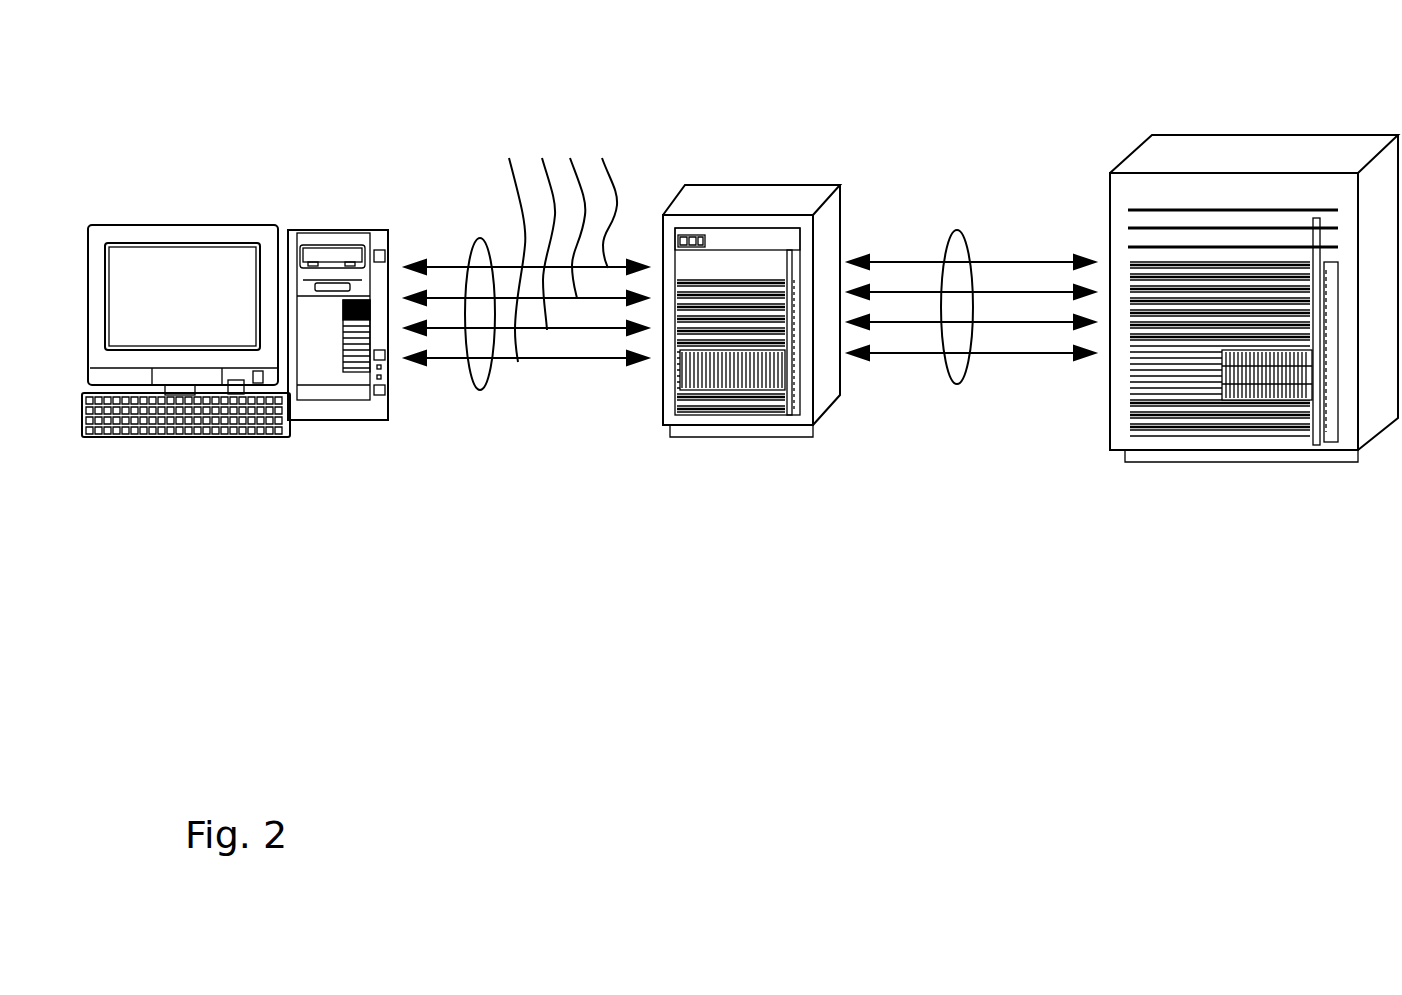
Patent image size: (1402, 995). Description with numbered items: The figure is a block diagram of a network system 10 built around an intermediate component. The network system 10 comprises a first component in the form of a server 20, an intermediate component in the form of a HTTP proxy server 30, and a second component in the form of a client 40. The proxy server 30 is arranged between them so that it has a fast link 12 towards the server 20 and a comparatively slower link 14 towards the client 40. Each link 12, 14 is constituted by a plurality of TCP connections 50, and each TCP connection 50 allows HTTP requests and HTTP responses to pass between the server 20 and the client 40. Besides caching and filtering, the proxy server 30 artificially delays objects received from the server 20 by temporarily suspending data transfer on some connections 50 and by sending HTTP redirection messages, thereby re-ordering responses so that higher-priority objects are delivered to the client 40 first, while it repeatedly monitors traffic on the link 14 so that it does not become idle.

The network system 10 is at (388, 111).
The fast link 12 is at (957, 383).
The slower link 14 is at (480, 390).
The server 20 is at (1225, 425).
The HTTP proxy server 30 is at (725, 418).
The client 40 is at (327, 362).
The TCP connections 50 is at (615, 140).